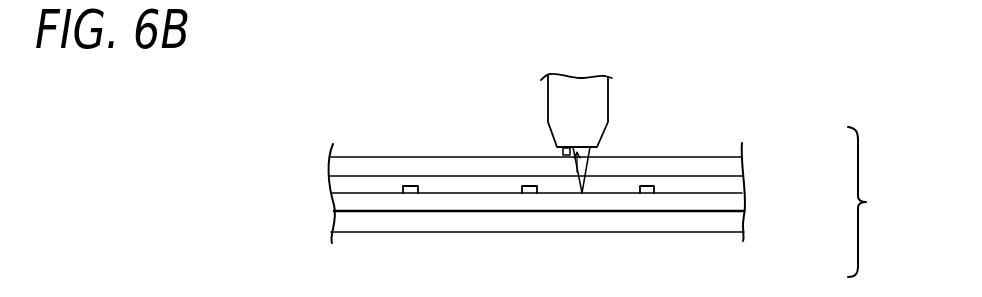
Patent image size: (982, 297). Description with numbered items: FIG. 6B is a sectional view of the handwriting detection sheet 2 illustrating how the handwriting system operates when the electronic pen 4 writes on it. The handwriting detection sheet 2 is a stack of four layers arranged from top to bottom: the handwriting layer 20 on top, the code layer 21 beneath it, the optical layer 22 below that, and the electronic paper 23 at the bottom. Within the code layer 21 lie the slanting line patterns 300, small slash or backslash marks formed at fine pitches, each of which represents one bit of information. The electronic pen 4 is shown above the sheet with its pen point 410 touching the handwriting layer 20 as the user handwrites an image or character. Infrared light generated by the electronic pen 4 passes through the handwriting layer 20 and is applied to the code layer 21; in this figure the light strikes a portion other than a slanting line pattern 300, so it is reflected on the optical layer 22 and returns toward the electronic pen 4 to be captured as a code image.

The handwriting detection sheet 2 is at (611, 202).
The handwriting layer 20 is at (732, 168).
The code layer 21 is at (737, 187).
The optical layer 22 is at (740, 202).
The electronic paper 23 is at (740, 217).
The slanting line pattern 300 is at (645, 185).
The electronic pen 4 is at (591, 110).
The pen point 410 is at (562, 153).